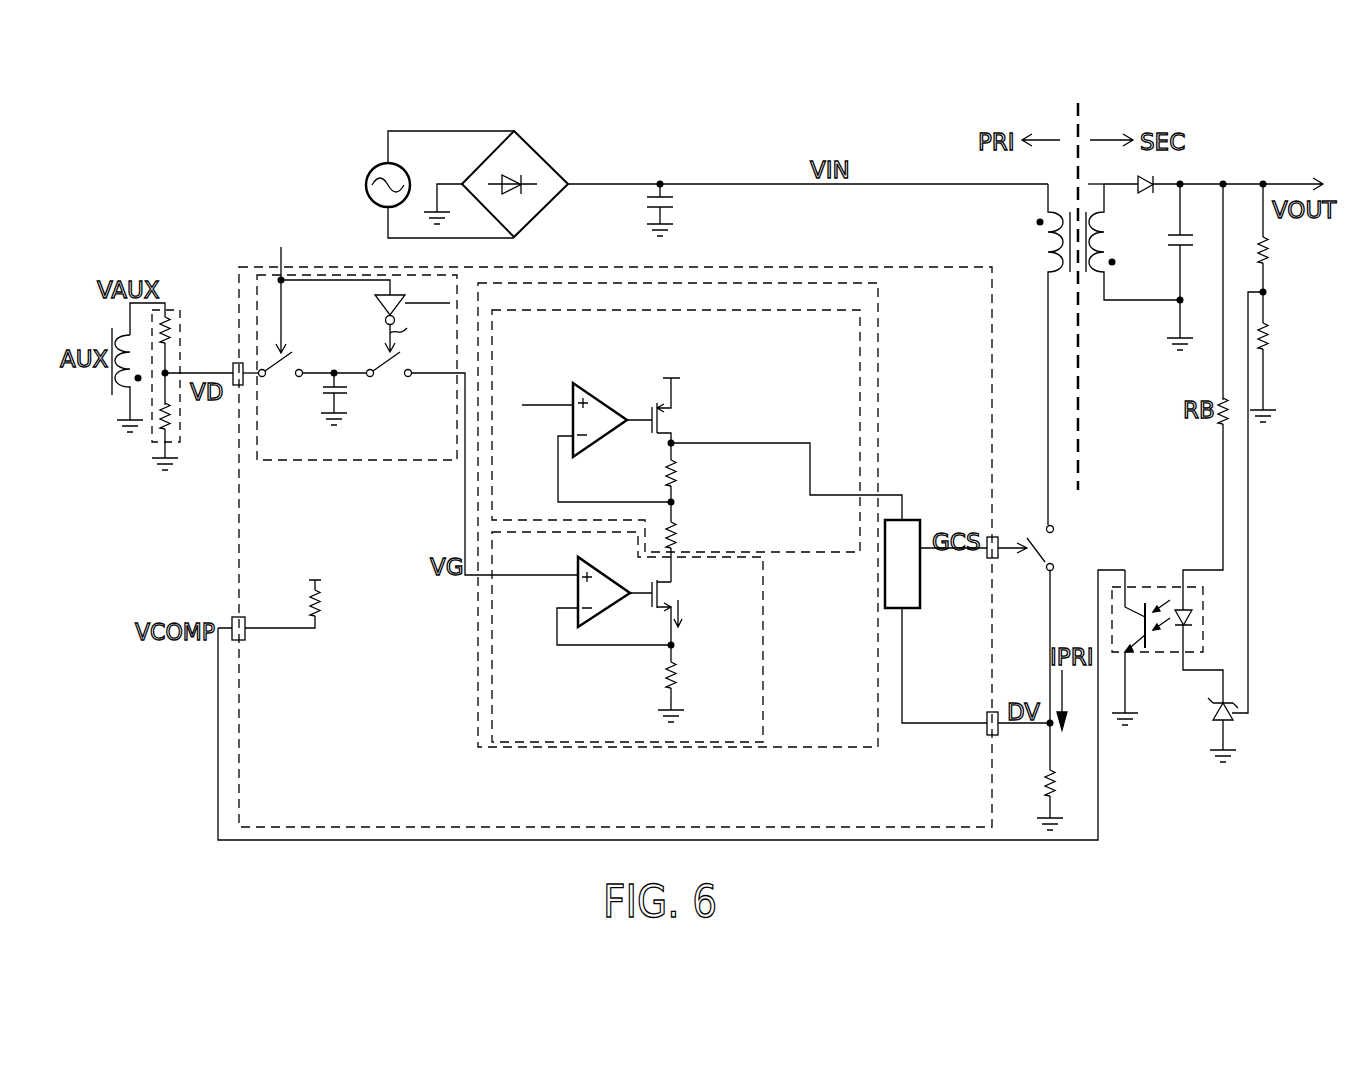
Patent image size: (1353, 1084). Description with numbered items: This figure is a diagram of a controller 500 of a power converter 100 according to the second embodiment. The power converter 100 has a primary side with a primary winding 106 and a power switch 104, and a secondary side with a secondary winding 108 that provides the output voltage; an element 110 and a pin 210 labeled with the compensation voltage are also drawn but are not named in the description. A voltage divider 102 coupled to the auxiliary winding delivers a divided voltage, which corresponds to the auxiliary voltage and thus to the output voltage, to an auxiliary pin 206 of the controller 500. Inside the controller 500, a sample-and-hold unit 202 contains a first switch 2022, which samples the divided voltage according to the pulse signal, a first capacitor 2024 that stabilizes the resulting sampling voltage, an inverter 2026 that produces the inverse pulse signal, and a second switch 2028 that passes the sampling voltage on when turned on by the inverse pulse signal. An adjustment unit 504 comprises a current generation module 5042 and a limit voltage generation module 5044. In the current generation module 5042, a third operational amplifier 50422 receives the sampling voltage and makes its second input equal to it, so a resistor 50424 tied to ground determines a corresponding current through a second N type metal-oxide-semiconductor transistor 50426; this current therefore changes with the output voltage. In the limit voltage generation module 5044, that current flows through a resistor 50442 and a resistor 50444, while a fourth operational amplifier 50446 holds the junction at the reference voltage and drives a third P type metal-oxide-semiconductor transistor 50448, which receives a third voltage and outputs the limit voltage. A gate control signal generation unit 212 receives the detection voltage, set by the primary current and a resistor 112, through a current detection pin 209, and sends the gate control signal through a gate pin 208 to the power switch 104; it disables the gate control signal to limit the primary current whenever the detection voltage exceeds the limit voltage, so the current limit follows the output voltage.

The power converter 100 is at (1234, 167).
The voltage divider 102 is at (177, 308).
The power switch 104 is at (1045, 550).
The primary winding 106 is at (1043, 238).
The secondary winding 108 is at (1128, 232).
The optocoupler 110 is at (1171, 589).
The resistor 112 is at (1067, 765).
The sample-and-hold unit 202 is at (417, 399).
The auxiliary pin 206 is at (233, 367).
The gate pin 208 is at (1000, 553).
The current detection pin 209 is at (1000, 732).
The compensation pin 210 is at (232, 623).
The gate control signal generation unit 212 is at (923, 510).
The controller 500 is at (707, 267).
The adjustment unit 504 is at (690, 550).
The first switch 2022 is at (282, 378).
The first capacitor 2024 is at (345, 392).
The inverter 2026 is at (375, 303).
The second switch 2028 is at (392, 378).
The current generation module 5042 is at (627, 674).
The limit voltage generation module 5044 is at (697, 466).
The third operational amplifier 50422 is at (617, 603).
The resistor 50424 is at (677, 668).
The second N type metal-oxide-semiconductor transistor 50426 is at (663, 590).
The resistor 50442 is at (677, 532).
The resistor 50444 is at (677, 465).
The fourth operational amplifier 50446 is at (580, 383).
The third P type metal-oxide-semiconductor transistor 50448 is at (665, 417).